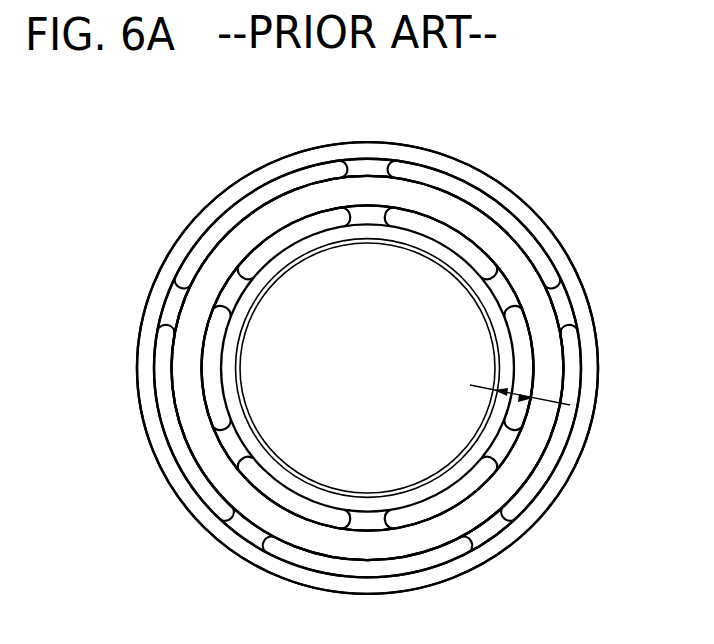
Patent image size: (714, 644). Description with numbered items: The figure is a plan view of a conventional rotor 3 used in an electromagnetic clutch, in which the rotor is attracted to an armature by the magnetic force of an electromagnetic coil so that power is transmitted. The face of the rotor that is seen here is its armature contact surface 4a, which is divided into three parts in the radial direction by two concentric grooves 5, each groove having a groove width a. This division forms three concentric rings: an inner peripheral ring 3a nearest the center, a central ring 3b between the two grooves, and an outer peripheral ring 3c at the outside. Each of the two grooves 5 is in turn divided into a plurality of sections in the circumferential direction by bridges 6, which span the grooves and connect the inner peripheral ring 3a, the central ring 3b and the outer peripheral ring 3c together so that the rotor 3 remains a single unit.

The rotor 3 is at (497, 146).
The inner peripheral ring 3a is at (293, 487).
The central ring 3b is at (460, 518).
The outer peripheral ring 3c is at (542, 505).
The armature contact surface 4a is at (285, 528).
The grooves 5 is at (538, 252).
The bridges 6 is at (368, 167).
The groove width a is at (520, 382).